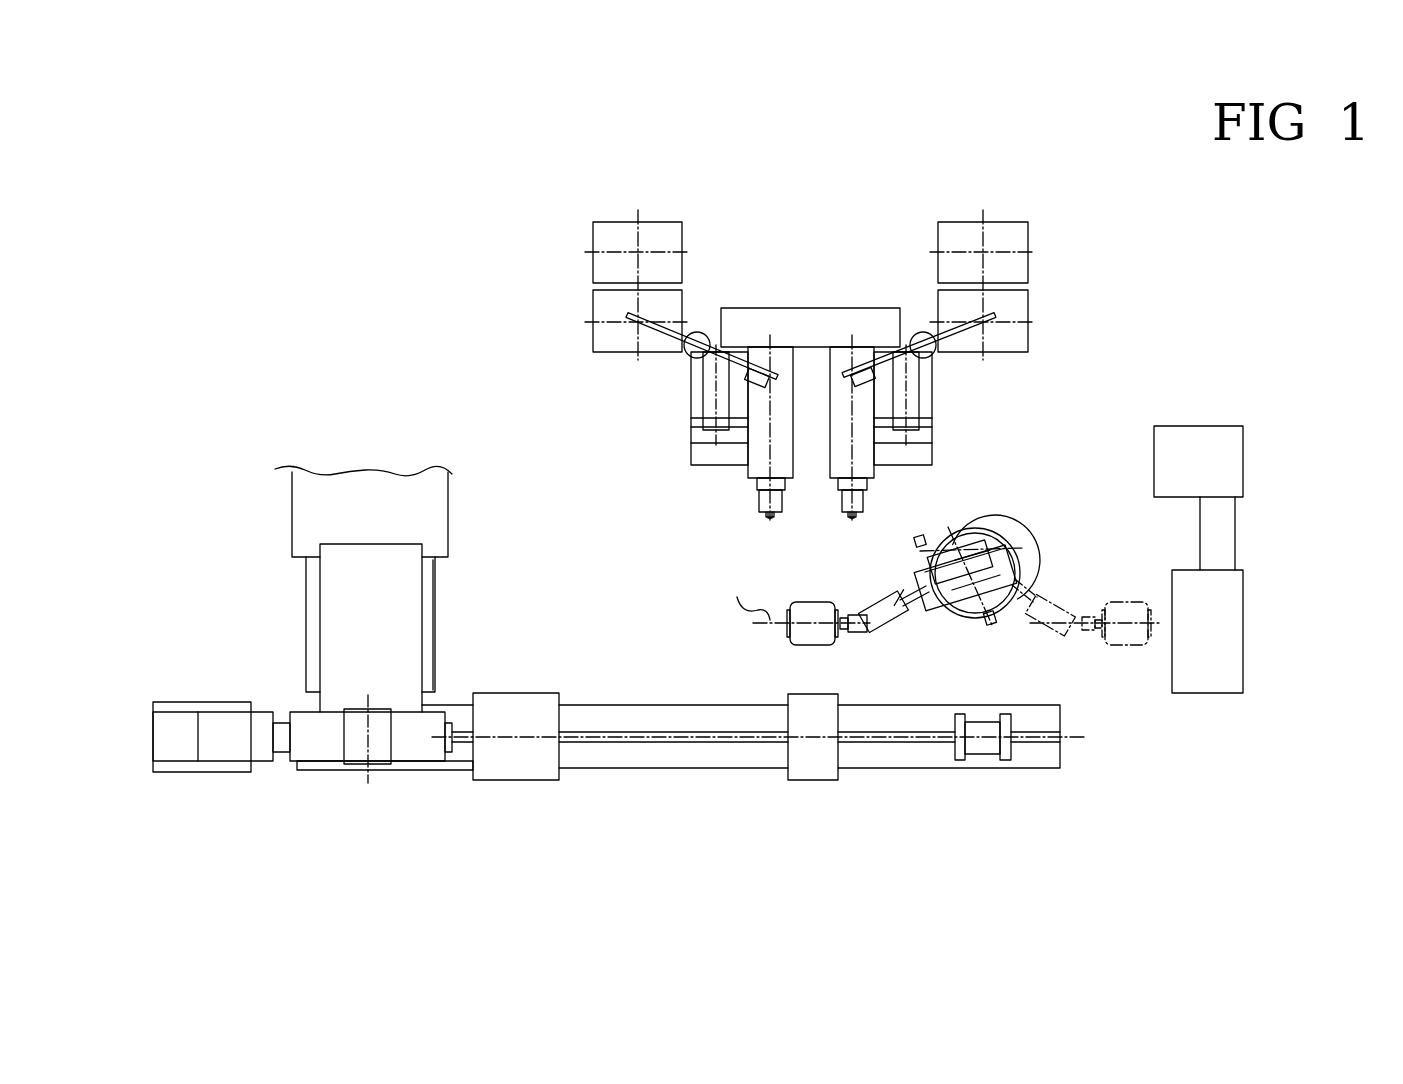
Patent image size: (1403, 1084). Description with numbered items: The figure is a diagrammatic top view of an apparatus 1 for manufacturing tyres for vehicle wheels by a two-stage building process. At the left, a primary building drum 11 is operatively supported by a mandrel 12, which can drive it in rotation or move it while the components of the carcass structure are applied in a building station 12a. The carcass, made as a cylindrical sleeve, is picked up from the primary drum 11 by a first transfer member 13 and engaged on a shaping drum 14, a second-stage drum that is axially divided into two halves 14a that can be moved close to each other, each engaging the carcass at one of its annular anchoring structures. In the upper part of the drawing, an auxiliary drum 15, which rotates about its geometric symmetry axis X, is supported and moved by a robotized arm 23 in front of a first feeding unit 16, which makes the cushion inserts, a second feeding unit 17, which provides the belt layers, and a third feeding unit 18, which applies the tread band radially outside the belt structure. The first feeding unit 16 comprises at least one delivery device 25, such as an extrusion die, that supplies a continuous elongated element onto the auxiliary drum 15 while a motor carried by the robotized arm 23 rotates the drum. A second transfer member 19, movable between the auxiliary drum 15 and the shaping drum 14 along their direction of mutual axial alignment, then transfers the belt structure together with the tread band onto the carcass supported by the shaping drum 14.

The apparatus for manufacturing tyres 1 is at (437, 308).
The primary building drum 11 is at (358, 745).
The mandrel 12 is at (283, 745).
The building station 12a is at (287, 580).
The first transfer member 13 is at (508, 767).
The shaping drum 14 is at (983, 752).
The halves of the shaping drum 14a is at (960, 765).
The auxiliary drum 15 is at (833, 608).
The first feeding unit 16 is at (882, 502).
The second feeding unit 17 is at (1220, 652).
The third feeding unit 18 is at (757, 498).
The second transfer member 19 is at (827, 772).
The robotized arm 23 is at (973, 610).
The delivery device 25 is at (770, 517).